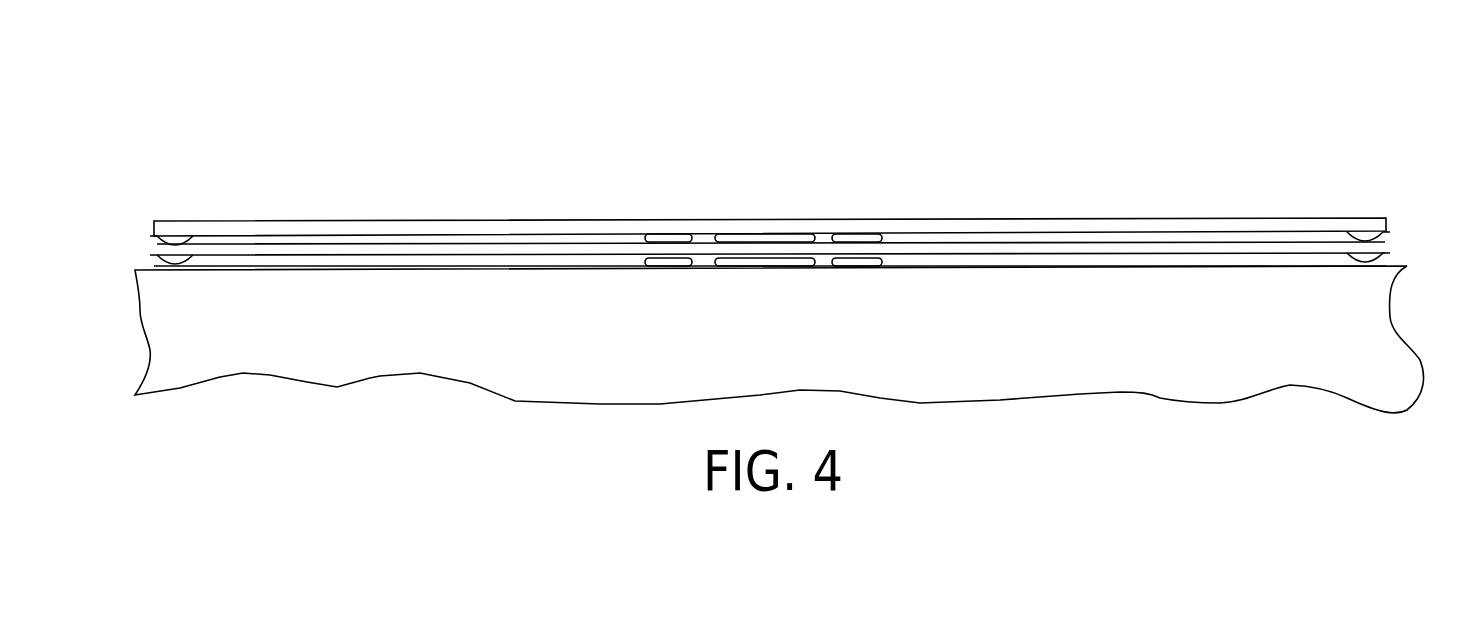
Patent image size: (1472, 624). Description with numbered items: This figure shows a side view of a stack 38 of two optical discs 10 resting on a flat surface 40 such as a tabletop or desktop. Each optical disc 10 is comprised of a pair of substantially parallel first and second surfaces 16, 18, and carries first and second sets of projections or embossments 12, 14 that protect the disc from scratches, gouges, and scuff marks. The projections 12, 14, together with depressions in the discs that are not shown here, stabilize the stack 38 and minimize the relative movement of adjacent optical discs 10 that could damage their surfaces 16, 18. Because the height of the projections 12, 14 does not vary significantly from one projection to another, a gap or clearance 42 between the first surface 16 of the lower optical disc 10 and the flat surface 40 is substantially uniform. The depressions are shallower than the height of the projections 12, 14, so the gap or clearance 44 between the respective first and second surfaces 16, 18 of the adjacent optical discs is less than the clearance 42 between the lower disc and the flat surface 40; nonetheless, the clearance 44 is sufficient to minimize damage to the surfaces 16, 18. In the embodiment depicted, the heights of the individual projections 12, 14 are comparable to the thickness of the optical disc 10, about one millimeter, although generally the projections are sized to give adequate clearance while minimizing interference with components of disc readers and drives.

The optical disc 10 is at (1012, 231).
The first set of projections 12 is at (158, 264).
The second set of projections 14 is at (661, 243).
The first surface 16 is at (372, 246).
The second surface 18 is at (251, 222).
The stack 38 is at (1248, 131).
The flat surface 40 is at (1207, 265).
The clearance 42 is at (515, 263).
The clearance 44 is at (462, 243).